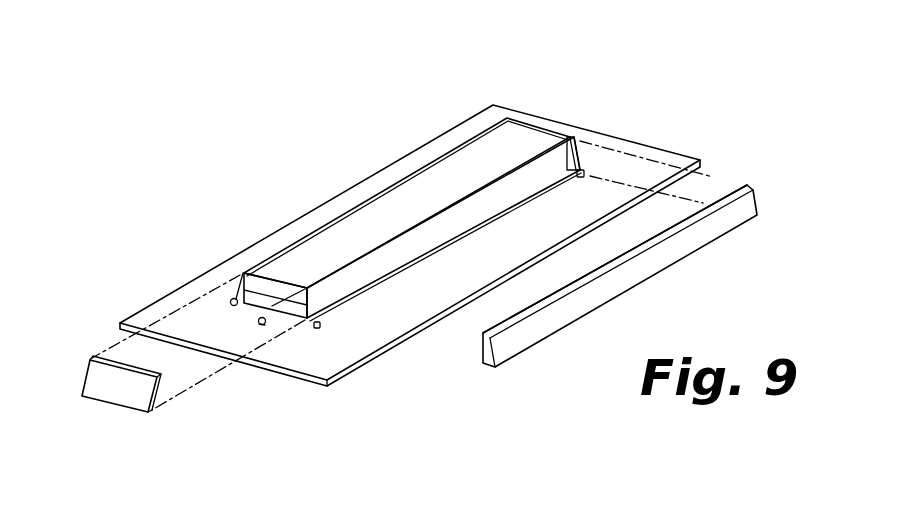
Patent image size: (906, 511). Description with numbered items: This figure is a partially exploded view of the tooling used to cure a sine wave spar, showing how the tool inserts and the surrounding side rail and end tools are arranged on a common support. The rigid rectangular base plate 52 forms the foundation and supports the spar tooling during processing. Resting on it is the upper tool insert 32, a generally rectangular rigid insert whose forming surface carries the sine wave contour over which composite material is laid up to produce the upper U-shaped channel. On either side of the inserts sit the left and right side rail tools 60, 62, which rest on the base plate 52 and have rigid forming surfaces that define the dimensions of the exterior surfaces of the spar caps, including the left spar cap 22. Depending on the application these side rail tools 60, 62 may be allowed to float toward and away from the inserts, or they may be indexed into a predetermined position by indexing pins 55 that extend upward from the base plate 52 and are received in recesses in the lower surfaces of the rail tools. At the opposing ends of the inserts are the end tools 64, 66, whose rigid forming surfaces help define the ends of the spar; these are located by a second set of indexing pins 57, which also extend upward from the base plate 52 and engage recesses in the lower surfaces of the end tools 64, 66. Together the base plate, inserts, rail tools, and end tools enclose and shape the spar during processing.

The base plate 52 is at (670, 155).
The upper tool insert 32 is at (513, 147).
The left spar cap 22 is at (513, 182).
The left side rail tool 60 is at (231, 299).
The indexing pins 57 is at (262, 325).
The indexing pins 55 is at (320, 328).
The end tool 66 is at (600, 147).
The right side rail tool 62 is at (677, 238).
The end tool 64 is at (112, 387).